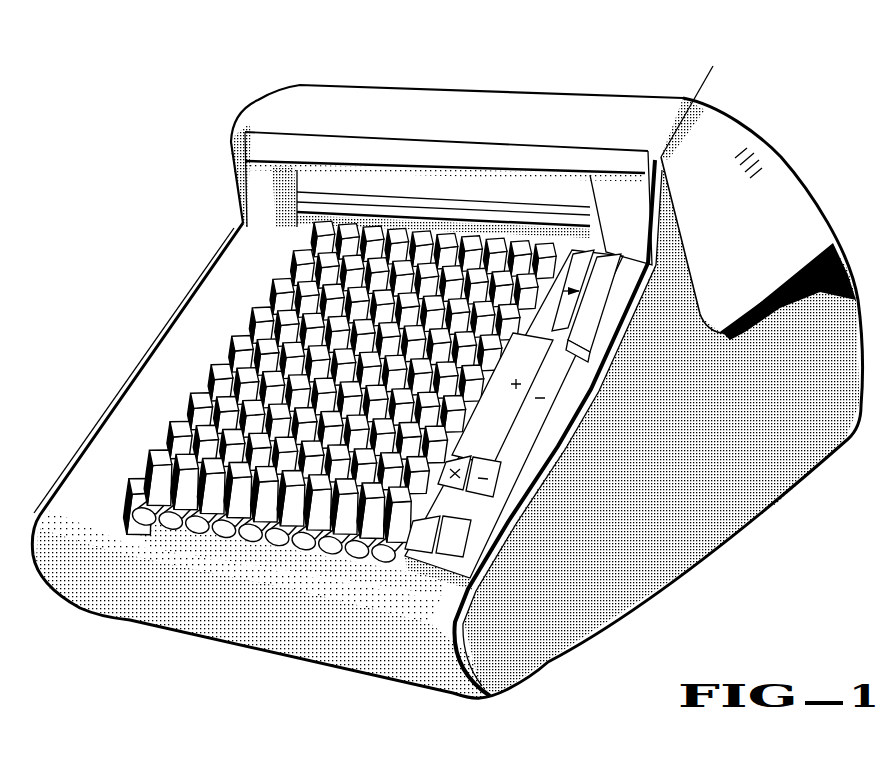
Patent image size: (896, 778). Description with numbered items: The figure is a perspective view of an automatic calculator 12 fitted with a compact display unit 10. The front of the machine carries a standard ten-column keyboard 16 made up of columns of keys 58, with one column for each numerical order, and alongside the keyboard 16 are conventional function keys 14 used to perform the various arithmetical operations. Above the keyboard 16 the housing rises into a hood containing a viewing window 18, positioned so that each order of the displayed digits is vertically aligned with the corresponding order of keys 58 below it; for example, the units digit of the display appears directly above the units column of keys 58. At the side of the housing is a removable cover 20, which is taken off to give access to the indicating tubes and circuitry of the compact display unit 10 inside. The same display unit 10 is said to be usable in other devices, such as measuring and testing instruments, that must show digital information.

The compact display unit 10 is at (715, 97).
The automatic calculator 12 is at (772, 524).
The function keys 14 is at (570, 322).
The ten-column keyboard 16 is at (215, 332).
The viewing window 18 is at (372, 183).
The removable cover 20 is at (781, 163).
The keys 58 is at (185, 418).